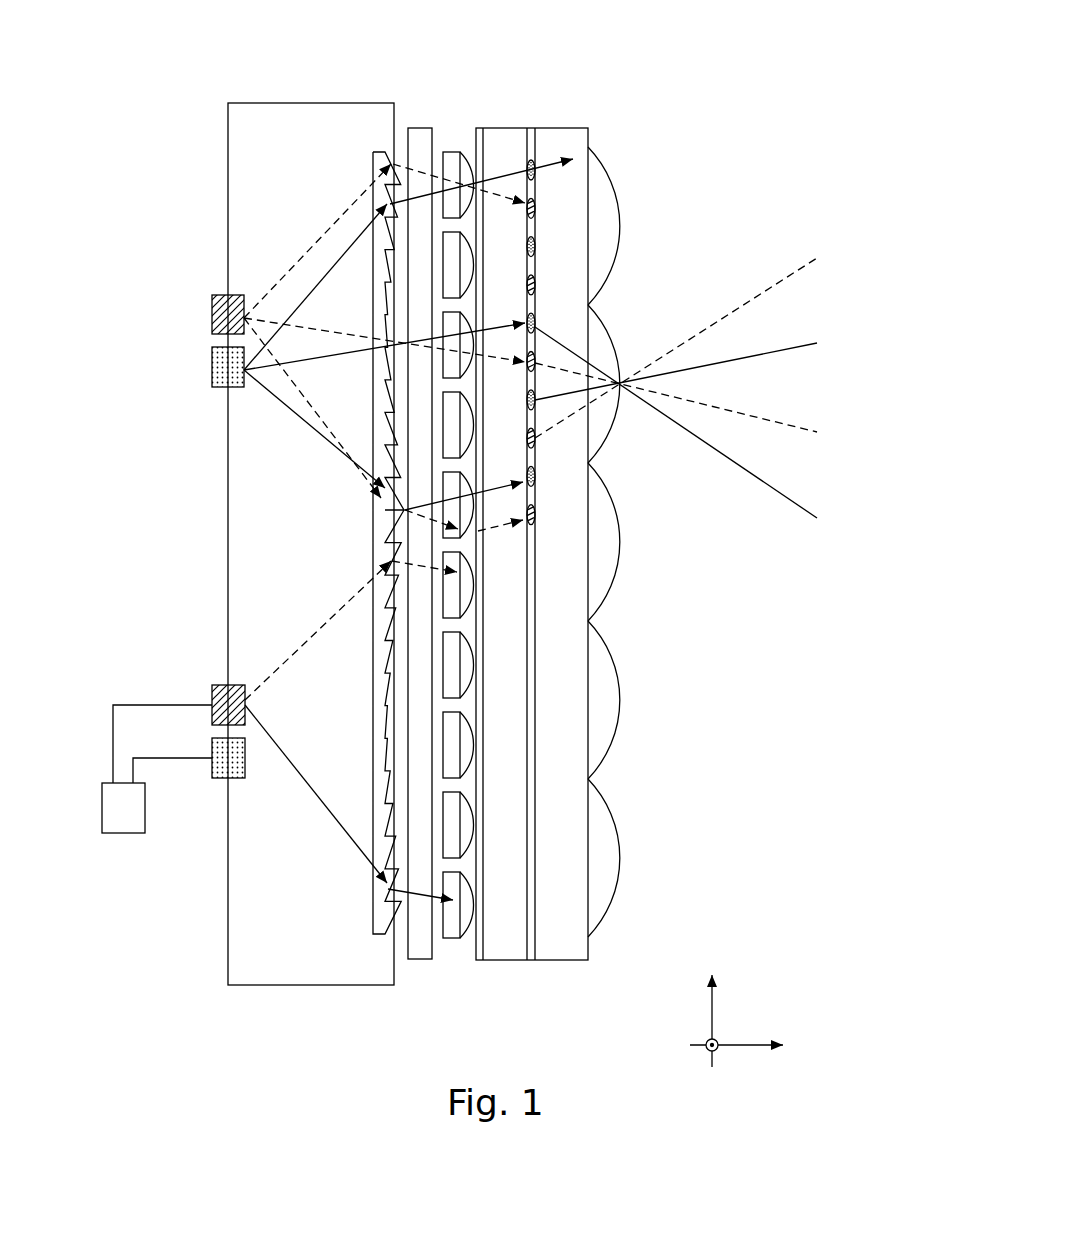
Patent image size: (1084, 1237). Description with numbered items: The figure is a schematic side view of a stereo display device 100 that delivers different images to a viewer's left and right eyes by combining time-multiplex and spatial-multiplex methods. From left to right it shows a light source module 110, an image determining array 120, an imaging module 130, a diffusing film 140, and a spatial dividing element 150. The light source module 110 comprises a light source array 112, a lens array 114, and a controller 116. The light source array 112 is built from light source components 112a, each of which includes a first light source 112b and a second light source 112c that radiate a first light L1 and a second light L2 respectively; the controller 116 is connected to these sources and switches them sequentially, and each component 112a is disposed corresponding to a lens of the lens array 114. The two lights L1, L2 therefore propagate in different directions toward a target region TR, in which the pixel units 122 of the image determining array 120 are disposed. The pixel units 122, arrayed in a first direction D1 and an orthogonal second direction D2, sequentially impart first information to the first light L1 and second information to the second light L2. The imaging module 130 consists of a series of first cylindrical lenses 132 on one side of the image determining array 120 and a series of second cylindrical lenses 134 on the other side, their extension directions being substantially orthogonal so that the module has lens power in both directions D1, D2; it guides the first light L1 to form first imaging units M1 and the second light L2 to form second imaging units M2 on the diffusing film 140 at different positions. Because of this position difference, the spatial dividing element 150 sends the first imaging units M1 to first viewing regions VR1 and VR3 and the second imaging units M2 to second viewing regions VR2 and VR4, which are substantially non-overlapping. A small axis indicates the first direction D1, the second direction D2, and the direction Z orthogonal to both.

The stereo display device 100 is at (224, 29).
The light source module 110 is at (222, 958).
The light source array 112 is at (212, 772).
The light source component 112a is at (162, 341).
The first light source 112b is at (212, 319).
The second light source 112c is at (196, 367).
The lens array 114 is at (376, 917).
The controller 116 is at (126, 820).
The image determining array 120 is at (592, 545).
The pixel unit 122 is at (450, 850).
The imaging module 130 is at (463, 493).
The first cylindrical lens 132 is at (415, 133).
The second cylindrical lens 134 is at (472, 160).
The diffusing film 140 is at (567, 541).
The spatial dividing element 150 is at (607, 203).
The first light L1 is at (398, 160).
The second light L2 is at (492, 165).
The first imaging unit M1 is at (535, 363).
The second imaging unit M2 is at (535, 327).
The target region TR is at (462, 740).
The first viewing region VR1 is at (701, 345).
The second viewing region VR2 is at (701, 369).
The first viewing region VR3 is at (701, 407).
The second viewing region VR4 is at (701, 432).
The first direction D1 is at (716, 999).
The second direction D2 is at (693, 1061).
The direction Z is at (761, 1046).